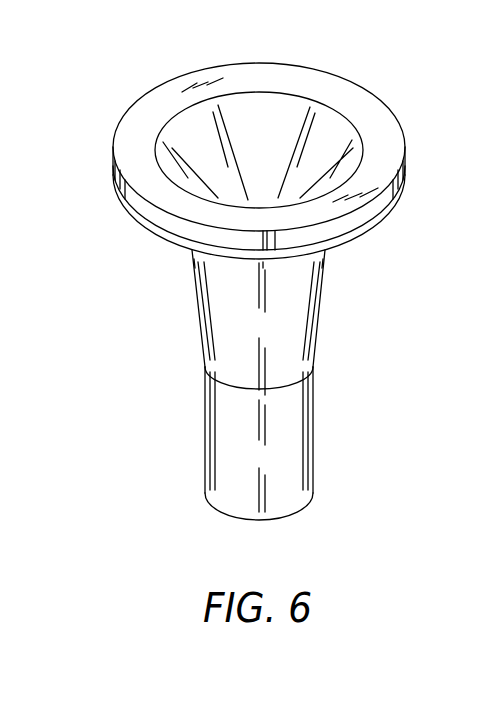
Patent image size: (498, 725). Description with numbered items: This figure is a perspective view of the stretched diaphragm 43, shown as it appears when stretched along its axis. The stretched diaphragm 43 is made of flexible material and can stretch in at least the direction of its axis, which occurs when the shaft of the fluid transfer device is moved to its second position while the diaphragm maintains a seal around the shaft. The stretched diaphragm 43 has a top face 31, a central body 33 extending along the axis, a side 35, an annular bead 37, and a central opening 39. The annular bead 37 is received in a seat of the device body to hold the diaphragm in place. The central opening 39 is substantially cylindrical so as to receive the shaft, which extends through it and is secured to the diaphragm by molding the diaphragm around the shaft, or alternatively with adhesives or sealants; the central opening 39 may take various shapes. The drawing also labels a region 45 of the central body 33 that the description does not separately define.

The stretched diaphragm 43 is at (163, 40).
The top face 31 is at (283, 78).
The central body 33 is at (297, 438).
The side 35 is at (328, 233).
The annular bead 37 is at (157, 235).
The central opening 39 is at (293, 513).
The tapered portion 45 is at (297, 318).